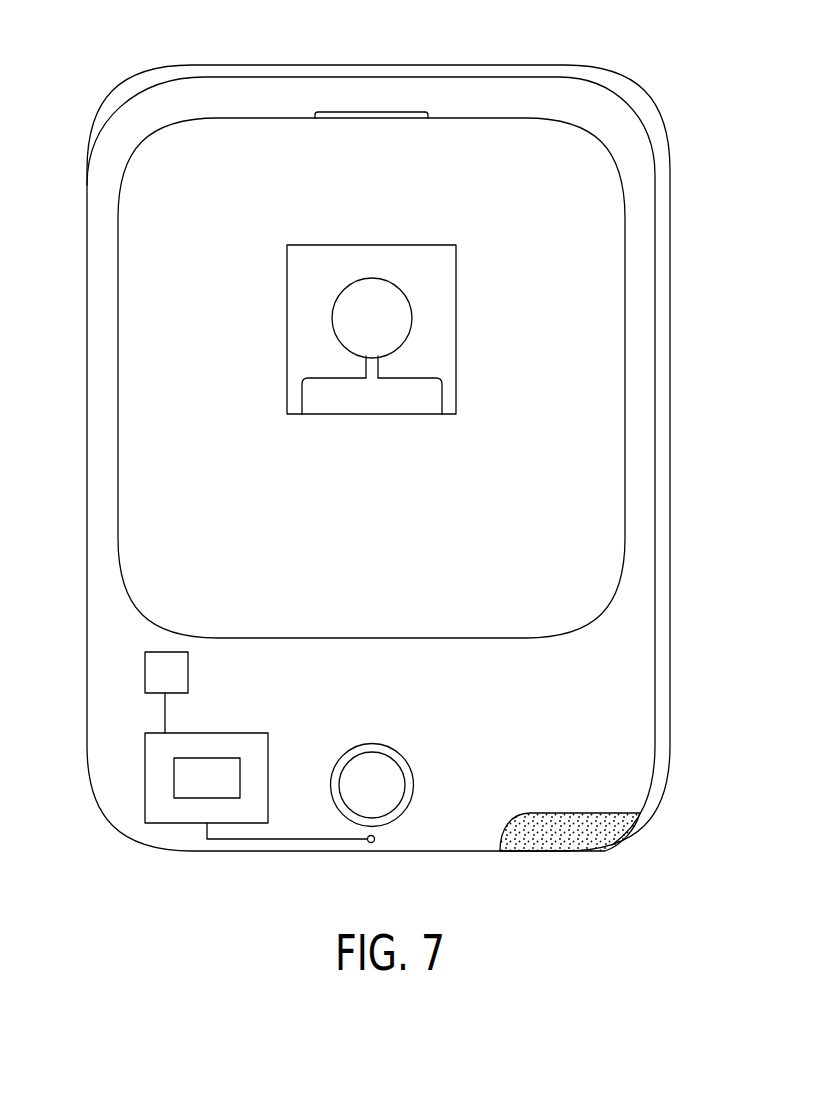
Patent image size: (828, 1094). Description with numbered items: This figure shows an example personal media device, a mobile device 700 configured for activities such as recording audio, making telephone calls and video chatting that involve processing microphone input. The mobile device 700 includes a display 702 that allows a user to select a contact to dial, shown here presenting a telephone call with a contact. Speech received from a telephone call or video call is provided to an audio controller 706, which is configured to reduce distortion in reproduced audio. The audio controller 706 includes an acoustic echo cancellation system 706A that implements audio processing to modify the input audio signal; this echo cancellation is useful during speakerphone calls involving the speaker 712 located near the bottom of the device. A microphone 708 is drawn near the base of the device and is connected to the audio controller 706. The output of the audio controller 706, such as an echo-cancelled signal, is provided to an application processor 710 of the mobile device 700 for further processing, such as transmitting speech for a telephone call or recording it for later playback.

The mobile device 700 is at (670, 527).
The display 702 is at (523, 118).
The audio controller 706 is at (257, 732).
The acoustic echo cancellation (AEC) system 706A is at (240, 777).
The microphone 708 is at (372, 843).
The application processor (AP) 710 is at (145, 683).
The speaker 712 is at (600, 840).